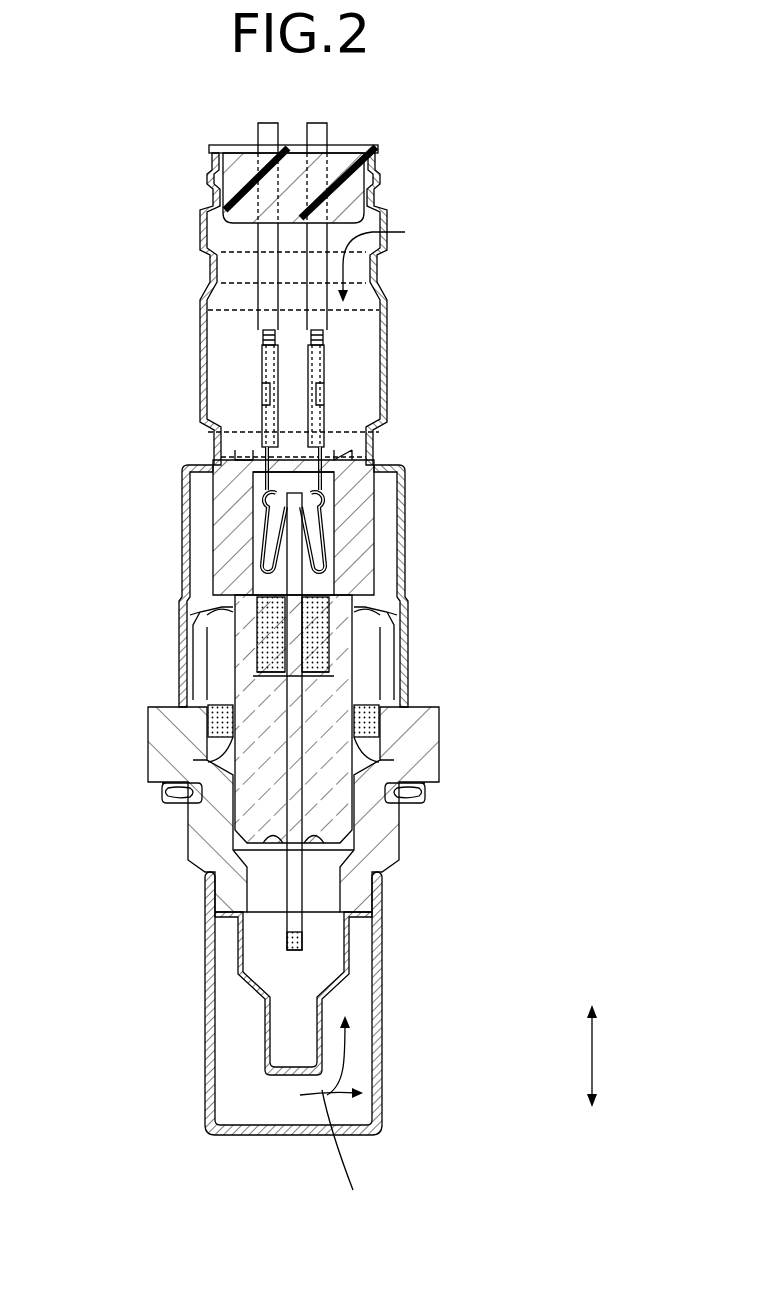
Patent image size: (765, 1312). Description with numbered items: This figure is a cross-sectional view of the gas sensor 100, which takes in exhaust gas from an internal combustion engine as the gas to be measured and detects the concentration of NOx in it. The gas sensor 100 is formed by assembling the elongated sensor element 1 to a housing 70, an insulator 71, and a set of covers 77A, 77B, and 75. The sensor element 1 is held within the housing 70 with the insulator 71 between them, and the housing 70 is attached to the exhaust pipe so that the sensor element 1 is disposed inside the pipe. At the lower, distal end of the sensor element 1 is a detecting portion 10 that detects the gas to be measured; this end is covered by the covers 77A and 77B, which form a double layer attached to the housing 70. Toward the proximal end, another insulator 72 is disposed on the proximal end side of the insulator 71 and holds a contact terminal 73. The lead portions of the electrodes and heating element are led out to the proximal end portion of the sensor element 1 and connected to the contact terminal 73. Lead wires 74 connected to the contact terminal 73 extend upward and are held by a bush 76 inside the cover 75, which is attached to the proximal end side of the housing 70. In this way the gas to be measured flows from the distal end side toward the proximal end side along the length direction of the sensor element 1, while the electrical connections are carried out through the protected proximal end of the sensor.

The gas sensor 100 is at (437, 178).
The sensor element 1 is at (297, 623).
The detecting portion 10 is at (290, 942).
The housing 70 is at (407, 737).
The insulator 71 is at (260, 765).
The insulator 72 is at (230, 518).
The contact terminal 73 is at (313, 540).
The lead wires 74 is at (270, 262).
The cover 75 is at (385, 340).
The bush 76 is at (243, 172).
The cover 77A is at (265, 1043).
The cover 77B is at (380, 1012).